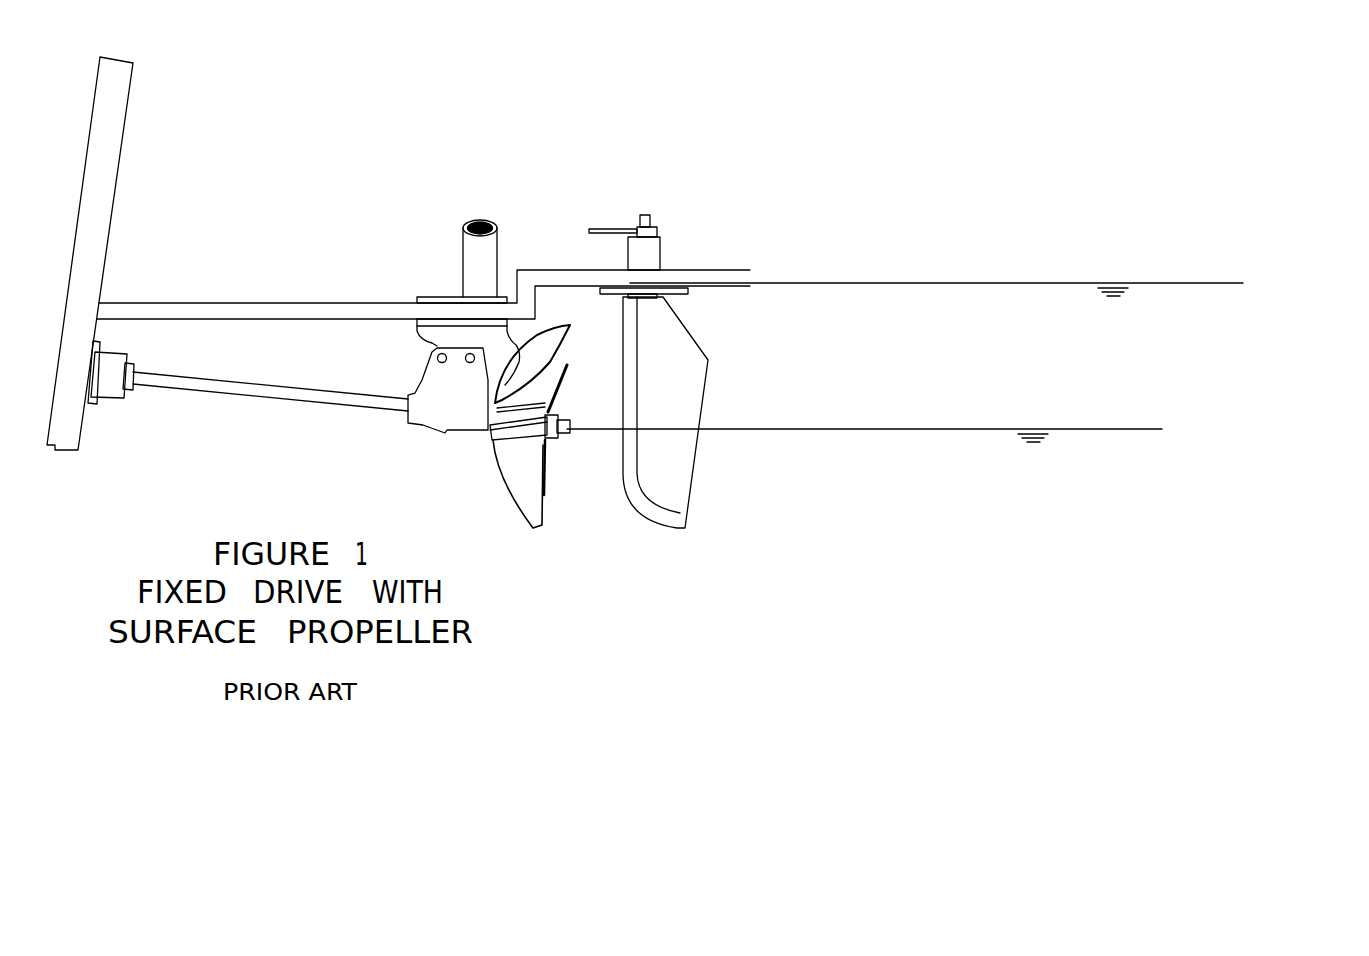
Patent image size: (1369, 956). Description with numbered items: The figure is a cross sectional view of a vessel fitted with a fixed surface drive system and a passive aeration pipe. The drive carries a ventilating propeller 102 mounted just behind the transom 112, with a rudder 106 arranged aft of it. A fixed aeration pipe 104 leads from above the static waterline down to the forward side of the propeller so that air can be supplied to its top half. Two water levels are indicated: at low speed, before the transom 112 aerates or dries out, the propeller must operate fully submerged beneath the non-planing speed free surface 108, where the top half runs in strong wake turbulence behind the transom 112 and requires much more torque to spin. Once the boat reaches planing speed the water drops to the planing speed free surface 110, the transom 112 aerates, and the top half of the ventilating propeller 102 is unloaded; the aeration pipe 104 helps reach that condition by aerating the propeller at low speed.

The ventilating propeller 102 is at (523, 508).
The aeration pipe 104 is at (470, 277).
The rudder 106 is at (677, 388).
The non-planing speed free surface 108 is at (1186, 288).
The planing speed free surface 110 is at (1100, 432).
The transom 112 is at (108, 102).